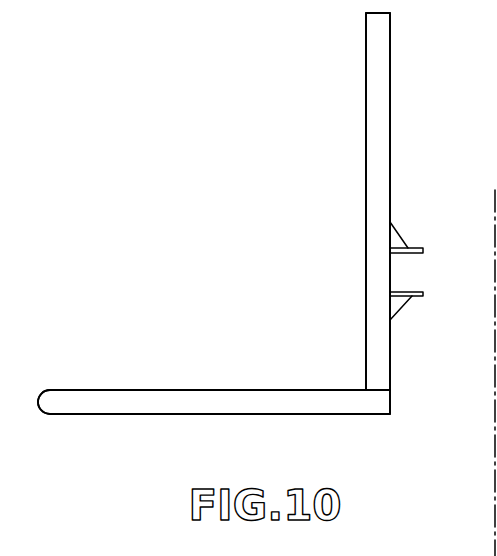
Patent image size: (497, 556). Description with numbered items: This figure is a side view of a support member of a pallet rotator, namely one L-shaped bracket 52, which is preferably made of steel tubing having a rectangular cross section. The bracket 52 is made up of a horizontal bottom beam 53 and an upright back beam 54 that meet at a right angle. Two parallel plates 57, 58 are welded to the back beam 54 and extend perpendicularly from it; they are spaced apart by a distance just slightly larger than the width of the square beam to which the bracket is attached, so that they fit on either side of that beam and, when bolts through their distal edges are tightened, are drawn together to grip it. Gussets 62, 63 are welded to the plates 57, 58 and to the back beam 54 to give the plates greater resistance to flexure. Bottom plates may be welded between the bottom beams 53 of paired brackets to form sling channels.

The L-shaped bracket 52 is at (233, 313).
The bottom beam 53 is at (220, 402).
The back beam 54 is at (381, 93).
The plate 57 is at (425, 251).
The plate 58 is at (415, 297).
The gusset 62 is at (395, 246).
The gusset 63 is at (397, 303).